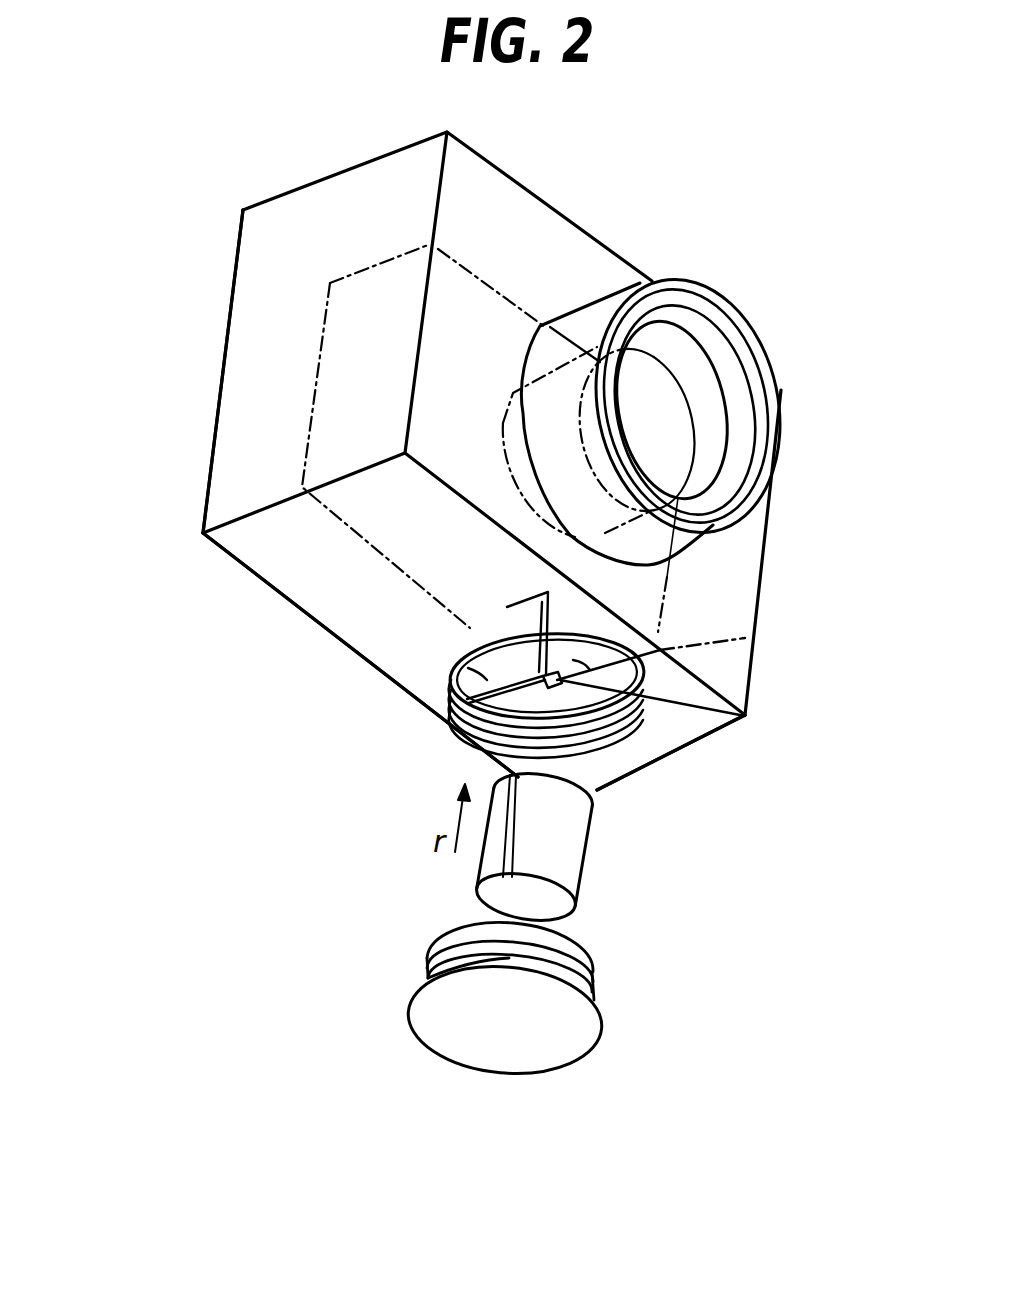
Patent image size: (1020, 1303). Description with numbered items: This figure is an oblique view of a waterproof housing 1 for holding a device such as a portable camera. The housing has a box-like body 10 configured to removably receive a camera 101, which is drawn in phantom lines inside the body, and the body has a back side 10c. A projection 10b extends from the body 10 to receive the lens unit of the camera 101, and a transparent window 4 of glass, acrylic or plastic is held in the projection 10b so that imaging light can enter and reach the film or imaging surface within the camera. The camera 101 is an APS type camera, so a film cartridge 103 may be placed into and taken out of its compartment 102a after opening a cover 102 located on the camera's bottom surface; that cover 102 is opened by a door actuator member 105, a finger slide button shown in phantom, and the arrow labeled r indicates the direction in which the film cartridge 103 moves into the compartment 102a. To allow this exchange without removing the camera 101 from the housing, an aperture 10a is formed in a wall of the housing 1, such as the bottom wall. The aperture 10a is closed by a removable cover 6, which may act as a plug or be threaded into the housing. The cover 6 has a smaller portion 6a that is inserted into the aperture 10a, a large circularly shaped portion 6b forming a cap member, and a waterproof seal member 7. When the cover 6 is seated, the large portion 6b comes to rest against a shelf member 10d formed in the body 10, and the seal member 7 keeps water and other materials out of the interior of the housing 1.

The waterproof housing 1 is at (225, 337).
The body 10 is at (292, 188).
The camera 101 is at (300, 438).
The projection 10b is at (716, 298).
The transparent window 4 is at (768, 378).
The back side 10c is at (352, 600).
The door actuator member 105 is at (745, 638).
The aperture 10a is at (593, 726).
The shelf member 10d is at (640, 722).
The cover 102 is at (468, 700).
The compartment 102a is at (745, 716).
The film cartridge 103 is at (560, 850).
The waterproof seal member 7 is at (470, 923).
The smaller portion 6a is at (597, 970).
The large portion 6b is at (510, 958).
The cover 6 is at (510, 1033).